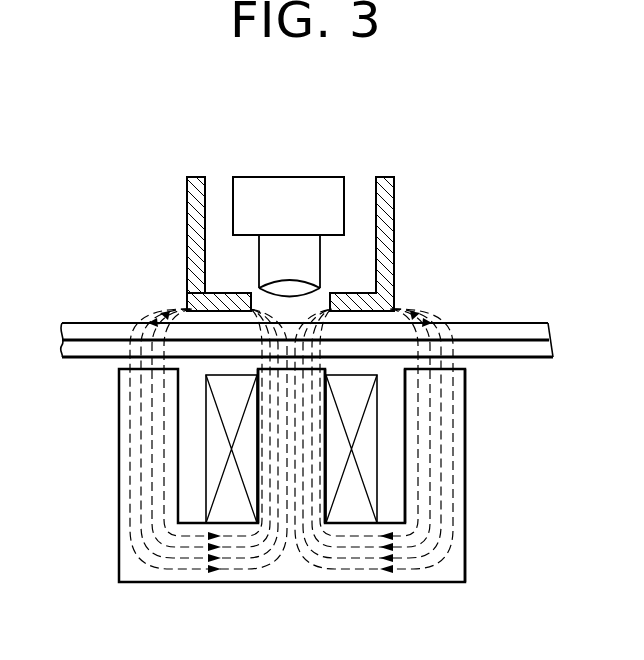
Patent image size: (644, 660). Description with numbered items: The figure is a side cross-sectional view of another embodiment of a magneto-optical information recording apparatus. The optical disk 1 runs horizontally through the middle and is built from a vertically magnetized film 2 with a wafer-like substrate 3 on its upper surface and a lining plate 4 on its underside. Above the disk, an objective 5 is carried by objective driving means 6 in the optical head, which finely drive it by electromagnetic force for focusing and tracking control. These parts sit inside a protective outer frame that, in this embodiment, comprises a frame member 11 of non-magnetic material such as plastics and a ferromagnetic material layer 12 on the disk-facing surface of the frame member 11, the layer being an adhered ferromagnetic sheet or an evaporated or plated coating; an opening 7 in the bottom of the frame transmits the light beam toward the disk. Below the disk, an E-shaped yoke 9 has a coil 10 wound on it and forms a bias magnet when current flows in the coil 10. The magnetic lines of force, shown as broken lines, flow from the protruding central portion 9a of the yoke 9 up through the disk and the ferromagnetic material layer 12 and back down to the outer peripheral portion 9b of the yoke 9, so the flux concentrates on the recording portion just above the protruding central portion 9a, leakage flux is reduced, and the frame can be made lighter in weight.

The optical disk 1 is at (327, 336).
The vertically magnetized film 2 is at (551, 337).
The substrate 3 is at (513, 323).
The lining plate 4 is at (536, 354).
The objective 5 is at (279, 286).
The objective driving means 6 is at (316, 188).
The opening 7 is at (330, 292).
The yoke 9 is at (332, 505).
The protruding central portion 9a is at (293, 493).
The outer peripheral portion 9b is at (463, 468).
The coil 10 is at (213, 470).
The frame member 11 is at (193, 192).
The ferromagnetic material layer 12 is at (186, 304).